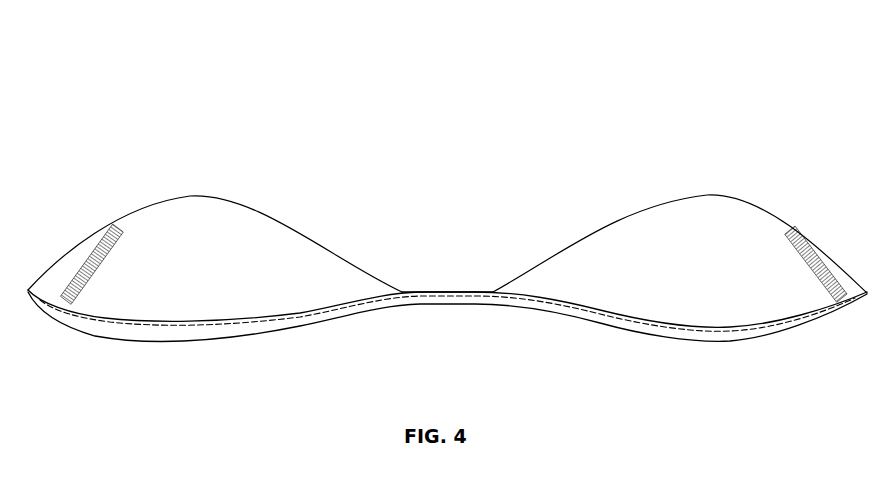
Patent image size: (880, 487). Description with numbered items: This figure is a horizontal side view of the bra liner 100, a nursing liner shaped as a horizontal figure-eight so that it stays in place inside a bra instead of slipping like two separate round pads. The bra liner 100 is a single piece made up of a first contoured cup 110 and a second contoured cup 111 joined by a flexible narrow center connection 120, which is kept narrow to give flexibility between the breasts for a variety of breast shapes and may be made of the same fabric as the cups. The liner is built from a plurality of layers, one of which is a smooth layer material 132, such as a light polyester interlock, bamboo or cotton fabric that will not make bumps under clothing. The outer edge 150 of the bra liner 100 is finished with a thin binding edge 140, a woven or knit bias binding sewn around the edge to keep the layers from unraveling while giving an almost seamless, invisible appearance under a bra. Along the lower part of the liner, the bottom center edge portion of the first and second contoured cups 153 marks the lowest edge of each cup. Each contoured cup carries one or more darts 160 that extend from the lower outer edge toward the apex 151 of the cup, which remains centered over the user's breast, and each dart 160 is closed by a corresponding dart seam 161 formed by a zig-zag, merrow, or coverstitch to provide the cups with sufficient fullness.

The bra liner 100 is at (352, 94).
The first contoured cup 110 is at (190, 208).
The second contoured cup 111 is at (652, 220).
The flexible narrow center connection 120 is at (438, 283).
The smooth layer material 132 is at (222, 268).
The binding edge 140 is at (825, 313).
The outer edge 150 is at (326, 308).
The apex 151 is at (116, 224).
The bottom center edge portion of the first and second contoured cups 153 is at (183, 323).
The dart 160 is at (93, 272).
The dart seam 161 is at (71, 273).